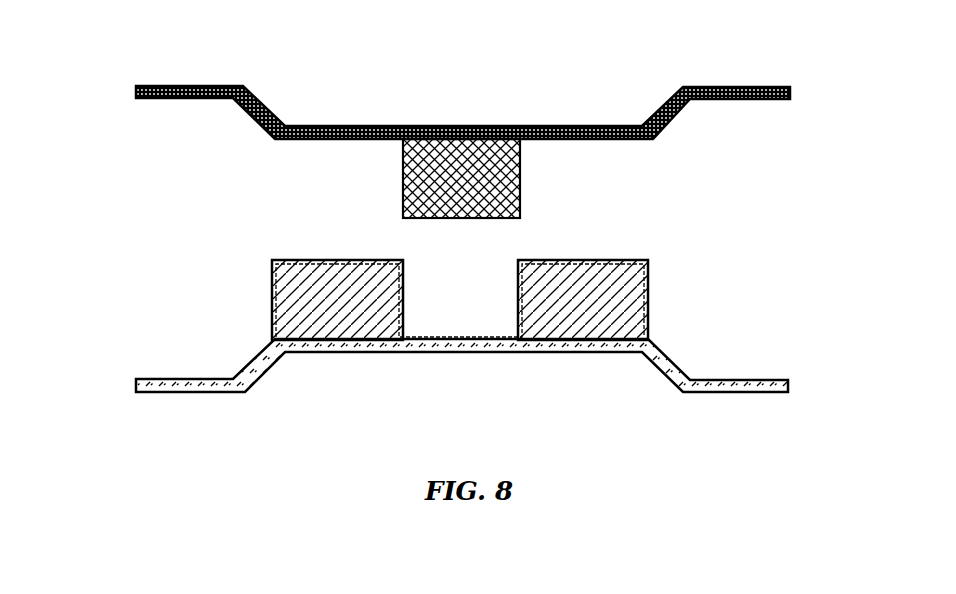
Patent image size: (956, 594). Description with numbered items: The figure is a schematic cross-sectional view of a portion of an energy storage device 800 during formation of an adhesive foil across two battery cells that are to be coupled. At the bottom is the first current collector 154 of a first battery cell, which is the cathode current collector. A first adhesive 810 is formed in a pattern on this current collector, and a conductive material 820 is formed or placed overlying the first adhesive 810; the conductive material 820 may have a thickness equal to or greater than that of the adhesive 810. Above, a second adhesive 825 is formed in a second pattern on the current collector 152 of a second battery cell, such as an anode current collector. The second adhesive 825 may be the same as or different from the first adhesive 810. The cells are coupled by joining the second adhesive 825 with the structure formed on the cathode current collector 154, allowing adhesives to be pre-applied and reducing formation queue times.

The energy storage device 800 is at (88, 78).
The current collector 152 is at (791, 93).
The first current collector 154 is at (789, 386).
The first adhesive 810 is at (617, 261).
The conductive material 820 is at (650, 334).
The second adhesive 825 is at (521, 165).